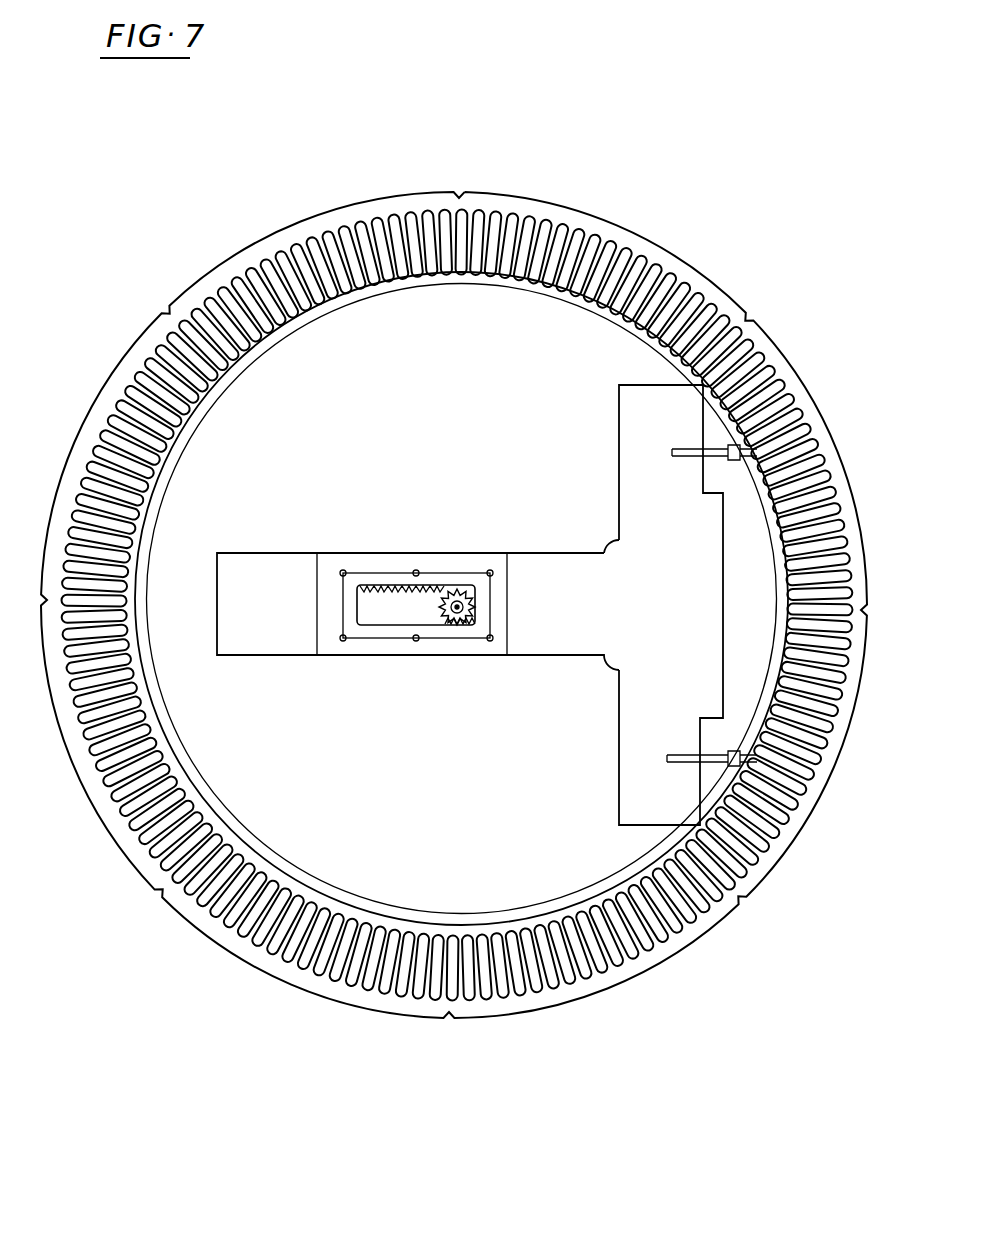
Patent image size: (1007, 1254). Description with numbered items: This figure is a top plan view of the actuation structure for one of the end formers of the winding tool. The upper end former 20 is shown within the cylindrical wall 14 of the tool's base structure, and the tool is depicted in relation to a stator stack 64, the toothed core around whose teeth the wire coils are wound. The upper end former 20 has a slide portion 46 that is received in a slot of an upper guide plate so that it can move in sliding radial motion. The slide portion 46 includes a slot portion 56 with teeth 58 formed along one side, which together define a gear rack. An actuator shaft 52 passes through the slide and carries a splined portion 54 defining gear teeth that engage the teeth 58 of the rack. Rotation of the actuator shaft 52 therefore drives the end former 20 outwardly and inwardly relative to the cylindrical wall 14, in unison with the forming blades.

The cylindrical wall 14 is at (525, 928).
The upper end former 20 is at (753, 522).
The slide portion 46 is at (290, 553).
The actuator shaft 52 is at (455, 585).
The splined portion 54 is at (445, 620).
The slot portion 56 is at (370, 610).
The teeth 58 is at (408, 590).
The stator stack 64 is at (504, 1016).